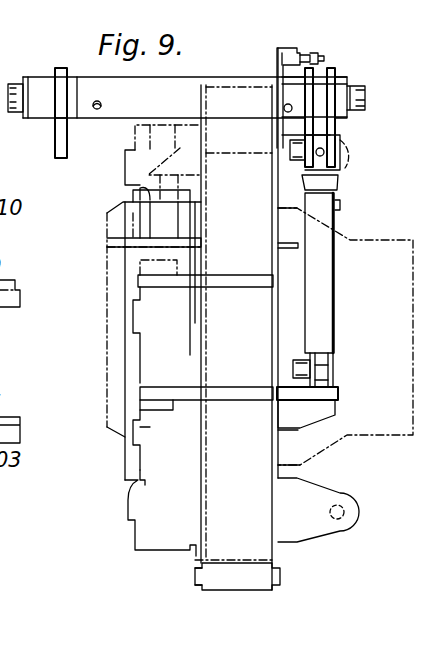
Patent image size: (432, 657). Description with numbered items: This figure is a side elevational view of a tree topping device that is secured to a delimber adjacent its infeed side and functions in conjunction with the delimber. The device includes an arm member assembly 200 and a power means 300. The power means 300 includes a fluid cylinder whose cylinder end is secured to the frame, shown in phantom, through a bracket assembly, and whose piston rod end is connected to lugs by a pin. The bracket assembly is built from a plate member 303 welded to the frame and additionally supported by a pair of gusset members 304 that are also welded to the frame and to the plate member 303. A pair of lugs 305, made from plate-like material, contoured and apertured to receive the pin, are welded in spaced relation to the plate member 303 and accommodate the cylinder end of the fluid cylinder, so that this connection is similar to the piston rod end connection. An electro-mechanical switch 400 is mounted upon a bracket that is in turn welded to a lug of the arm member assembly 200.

The arm member assembly 200 is at (55, 158).
The power means 300 is at (322, 303).
The plate member 303 is at (335, 391).
The gusset members 304 is at (322, 412).
The lugs 305 is at (322, 362).
The electro-mechanical switch 400 is at (292, 47).